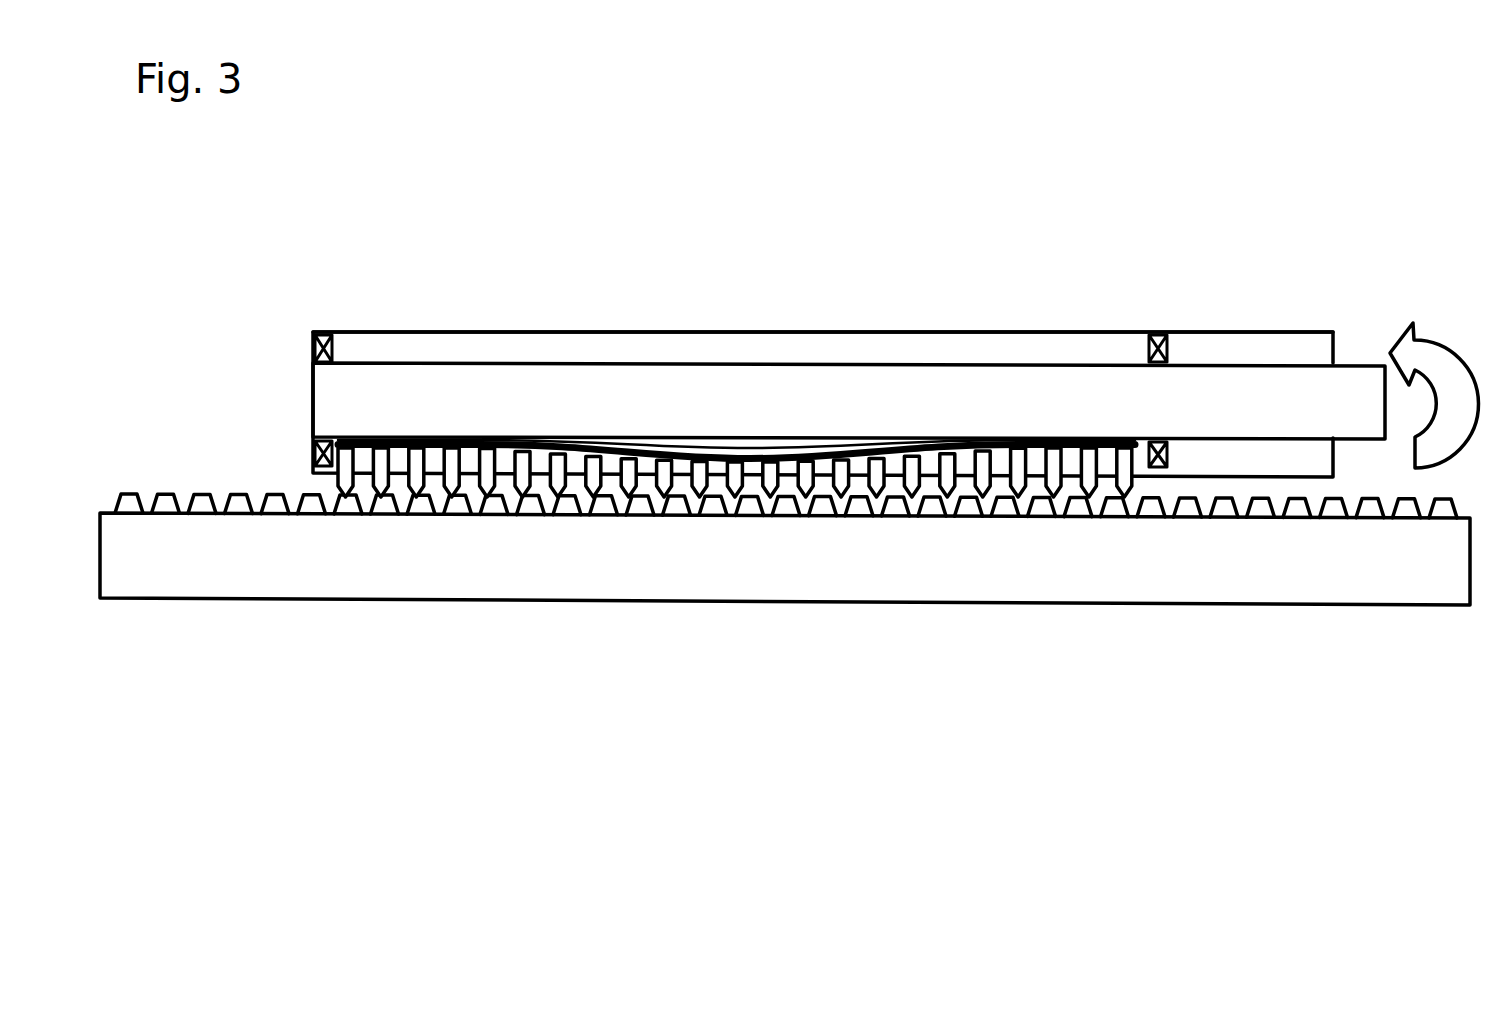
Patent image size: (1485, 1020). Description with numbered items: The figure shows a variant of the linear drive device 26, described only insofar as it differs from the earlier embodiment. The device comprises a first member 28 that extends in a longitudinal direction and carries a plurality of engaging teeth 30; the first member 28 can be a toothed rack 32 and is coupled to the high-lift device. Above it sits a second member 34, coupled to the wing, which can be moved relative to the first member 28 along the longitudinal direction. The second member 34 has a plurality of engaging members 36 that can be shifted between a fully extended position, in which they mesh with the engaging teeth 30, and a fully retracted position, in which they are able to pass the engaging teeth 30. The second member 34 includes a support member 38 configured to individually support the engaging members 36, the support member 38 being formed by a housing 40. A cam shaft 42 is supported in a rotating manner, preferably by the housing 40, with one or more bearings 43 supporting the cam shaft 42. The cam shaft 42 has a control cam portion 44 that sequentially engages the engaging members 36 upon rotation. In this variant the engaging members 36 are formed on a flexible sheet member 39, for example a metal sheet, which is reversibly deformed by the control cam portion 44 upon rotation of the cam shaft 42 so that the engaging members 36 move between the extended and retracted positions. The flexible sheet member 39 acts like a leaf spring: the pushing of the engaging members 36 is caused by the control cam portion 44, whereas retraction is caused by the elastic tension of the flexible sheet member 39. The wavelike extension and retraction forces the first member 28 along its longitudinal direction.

The linear drive device 26 is at (858, 346).
The first member 28 is at (785, 563).
The engaging teeth 30 is at (205, 497).
The toothed rack 32 is at (243, 583).
The second member 34 is at (484, 316).
The engaging members 36 is at (410, 428).
The support member 38 is at (686, 439).
The flexible sheet member 39 is at (497, 395).
The housing 40 is at (598, 340).
The cam shaft 42 is at (1253, 388).
The bearings 43 is at (318, 338).
The control cam portion 44 is at (747, 441).